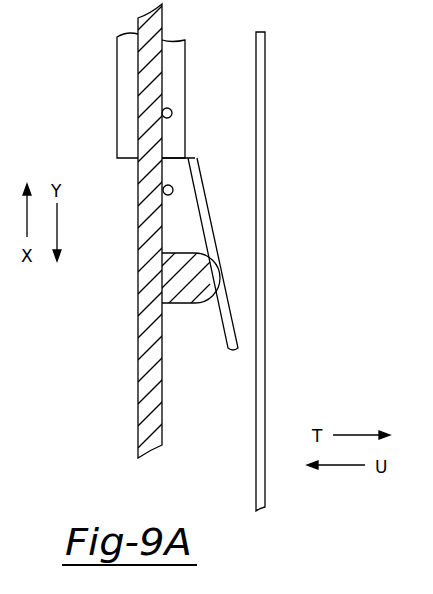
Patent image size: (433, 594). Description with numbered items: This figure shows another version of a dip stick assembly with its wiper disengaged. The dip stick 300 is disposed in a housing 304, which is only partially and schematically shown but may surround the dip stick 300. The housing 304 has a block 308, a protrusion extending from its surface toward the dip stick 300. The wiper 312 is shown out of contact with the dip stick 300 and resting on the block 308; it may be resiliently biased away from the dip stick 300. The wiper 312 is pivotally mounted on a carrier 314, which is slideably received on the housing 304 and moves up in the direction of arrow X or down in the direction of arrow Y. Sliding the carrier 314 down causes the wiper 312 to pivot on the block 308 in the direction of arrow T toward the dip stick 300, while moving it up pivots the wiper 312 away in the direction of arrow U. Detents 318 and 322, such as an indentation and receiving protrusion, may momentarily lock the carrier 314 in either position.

The dip stick 300 is at (266, 128).
The housing 304 is at (138, 343).
The block 308 is at (194, 280).
The wiper 312 is at (229, 303).
The carrier 314 is at (117, 60).
The detent 318 is at (172, 113).
The detent 322 is at (173, 190).